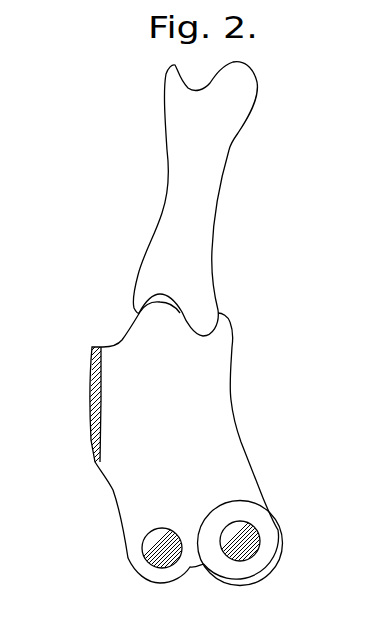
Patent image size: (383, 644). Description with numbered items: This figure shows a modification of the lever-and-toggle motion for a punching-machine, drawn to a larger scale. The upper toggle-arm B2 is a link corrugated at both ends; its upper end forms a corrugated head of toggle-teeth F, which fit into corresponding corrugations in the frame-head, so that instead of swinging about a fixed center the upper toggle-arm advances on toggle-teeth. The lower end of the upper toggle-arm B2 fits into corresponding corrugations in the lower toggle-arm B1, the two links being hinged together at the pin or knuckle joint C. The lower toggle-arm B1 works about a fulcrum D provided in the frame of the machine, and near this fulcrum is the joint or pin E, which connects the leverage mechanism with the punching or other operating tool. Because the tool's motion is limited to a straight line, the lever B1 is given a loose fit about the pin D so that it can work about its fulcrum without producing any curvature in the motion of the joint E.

The toggle-teeth F is at (210, 106).
The upper toggle-lever B2 is at (181, 243).
The pin or knuckle joint C is at (200, 315).
The lower toggle-lever B1 is at (181, 447).
The fulcrum pin D is at (145, 558).
The joint or pin E is at (260, 538).